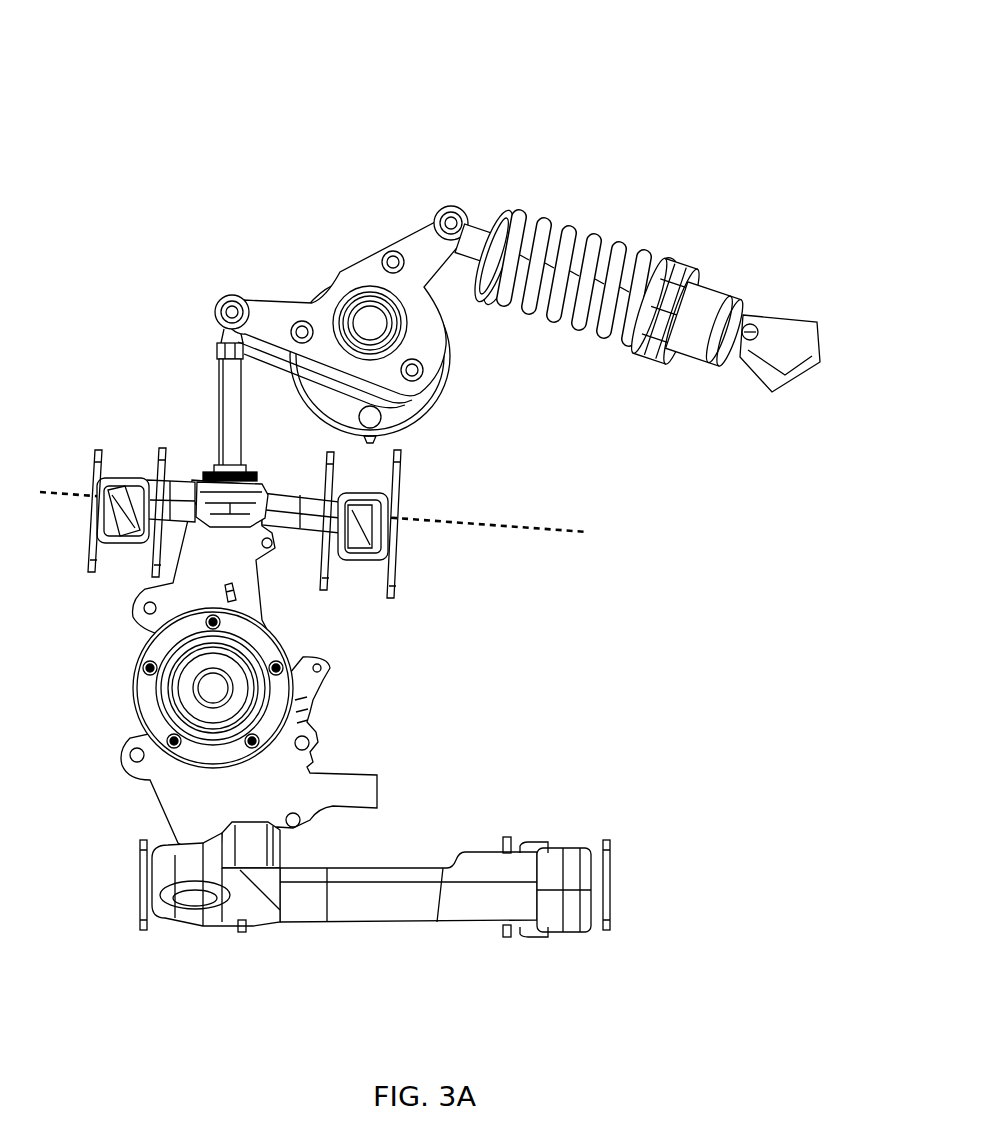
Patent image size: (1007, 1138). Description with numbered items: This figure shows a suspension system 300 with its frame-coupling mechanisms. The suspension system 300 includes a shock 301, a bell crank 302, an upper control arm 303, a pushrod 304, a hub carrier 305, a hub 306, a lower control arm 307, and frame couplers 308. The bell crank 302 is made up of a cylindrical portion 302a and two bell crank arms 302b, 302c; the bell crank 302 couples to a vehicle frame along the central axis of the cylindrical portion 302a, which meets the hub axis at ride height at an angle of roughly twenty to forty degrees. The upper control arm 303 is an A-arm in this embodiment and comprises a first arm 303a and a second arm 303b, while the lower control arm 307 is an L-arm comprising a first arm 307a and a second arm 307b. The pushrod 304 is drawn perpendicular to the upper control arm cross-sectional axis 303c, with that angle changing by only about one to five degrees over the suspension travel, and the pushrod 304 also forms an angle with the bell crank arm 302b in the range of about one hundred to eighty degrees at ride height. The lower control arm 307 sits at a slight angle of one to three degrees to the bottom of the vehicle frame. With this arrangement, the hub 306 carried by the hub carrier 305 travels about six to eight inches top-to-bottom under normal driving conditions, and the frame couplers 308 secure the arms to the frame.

The suspension system 300 is at (130, 58).
The shock 301 is at (613, 186).
The bell crank 302 is at (256, 190).
The cylindrical portion 302a is at (365, 240).
The bell crank arm 302b is at (246, 296).
The bell crank arm 302c is at (414, 220).
The upper control arm 303 is at (465, 578).
The first arm 303a is at (183, 472).
The second arm 303b is at (285, 490).
The upper control arm cross-sectional axis 303c is at (549, 500).
The pushrod 304 is at (217, 368).
The hub carrier 305 is at (312, 708).
The hub 306 is at (130, 683).
The lower control arm 307 is at (670, 826).
The first arm 307a is at (405, 866).
The second arm 307b is at (302, 925).
The frame couplers 308 is at (95, 468).